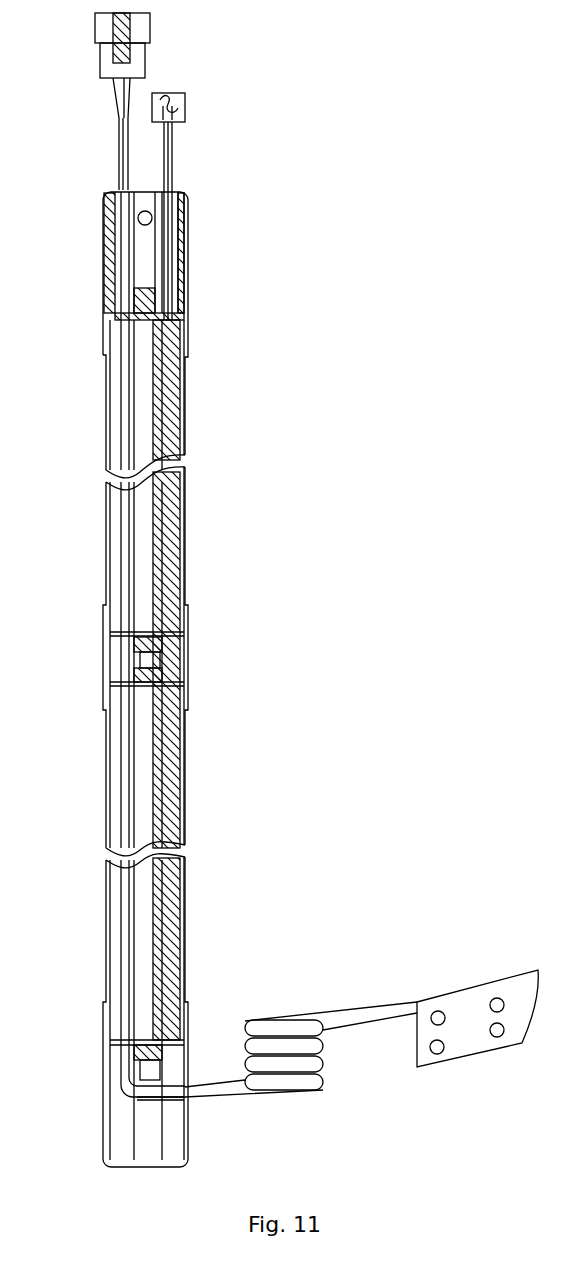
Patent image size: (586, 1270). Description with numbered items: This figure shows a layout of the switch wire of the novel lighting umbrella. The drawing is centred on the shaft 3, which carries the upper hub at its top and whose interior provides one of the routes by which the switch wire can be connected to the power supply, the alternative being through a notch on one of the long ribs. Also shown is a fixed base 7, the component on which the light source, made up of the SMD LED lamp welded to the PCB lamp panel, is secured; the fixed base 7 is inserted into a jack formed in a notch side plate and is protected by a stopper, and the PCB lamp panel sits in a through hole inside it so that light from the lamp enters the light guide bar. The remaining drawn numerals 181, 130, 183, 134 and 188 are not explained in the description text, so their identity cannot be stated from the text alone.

The cable connector 181 is at (118, 186).
The heating rod 130 is at (128, 592).
The outer sleeve 183 is at (105, 664).
The fixed base 7 is at (163, 636).
The insulating block 134 is at (187, 688).
The spacer 188 is at (180, 707).
The shaft 3 is at (465, 997).